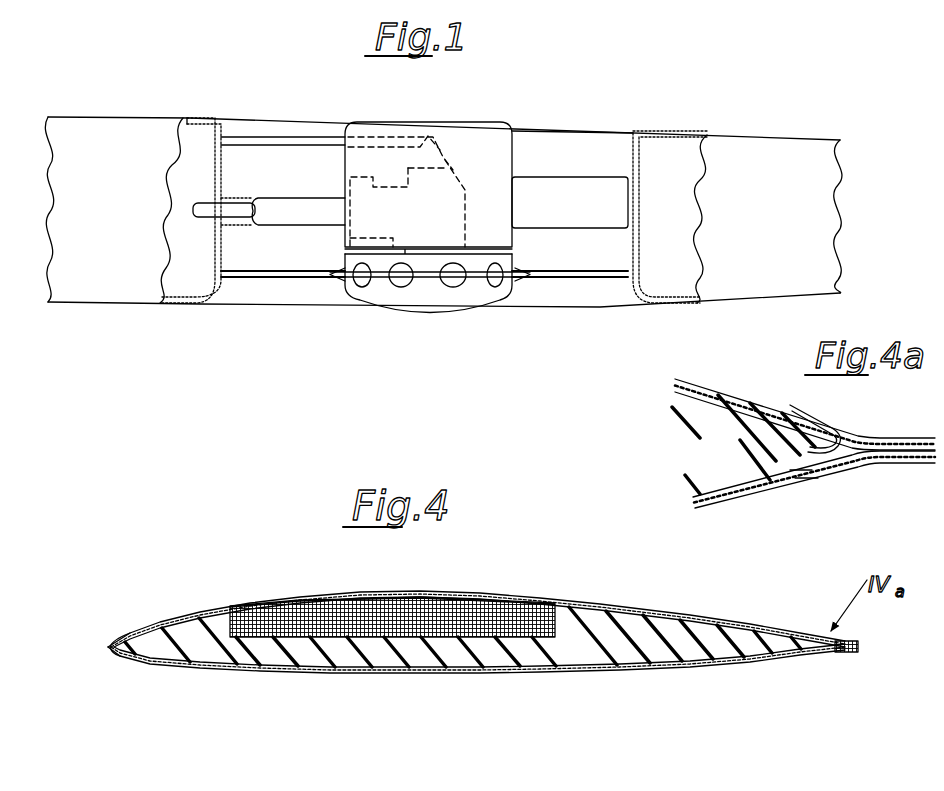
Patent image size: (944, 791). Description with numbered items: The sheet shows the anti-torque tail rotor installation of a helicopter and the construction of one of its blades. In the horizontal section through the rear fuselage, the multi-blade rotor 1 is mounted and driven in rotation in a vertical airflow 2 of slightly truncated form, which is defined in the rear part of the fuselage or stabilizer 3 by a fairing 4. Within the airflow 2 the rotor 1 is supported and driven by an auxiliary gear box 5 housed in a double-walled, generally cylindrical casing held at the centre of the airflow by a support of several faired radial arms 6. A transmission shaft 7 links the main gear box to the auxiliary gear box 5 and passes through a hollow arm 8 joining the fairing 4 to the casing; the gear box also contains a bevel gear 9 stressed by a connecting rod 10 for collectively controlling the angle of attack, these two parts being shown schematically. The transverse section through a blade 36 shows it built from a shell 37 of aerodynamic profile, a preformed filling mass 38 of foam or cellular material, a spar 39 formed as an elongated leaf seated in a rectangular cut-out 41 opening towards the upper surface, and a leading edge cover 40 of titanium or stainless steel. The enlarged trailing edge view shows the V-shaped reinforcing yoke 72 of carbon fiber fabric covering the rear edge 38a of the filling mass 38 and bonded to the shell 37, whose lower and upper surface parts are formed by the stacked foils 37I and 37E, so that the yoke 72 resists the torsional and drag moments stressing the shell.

In FIG. 1, the multi-blade rotor 1 is at (434, 322).
In FIG. 1, the airflow 2 is at (568, 152).
In FIG. 1, the fuselage 3 is at (88, 245).
In FIG. 1, the fairing 4 is at (213, 258).
In FIG. 1, the auxiliary gear box 5 is at (483, 150).
In FIG. 1, the faired radial arms 6 is at (607, 200).
In FIG. 1, the transmission shaft 7 is at (210, 205).
In FIG. 1, the hollow arm 8 is at (287, 213).
In FIG. 1, the bevel gear 9 is at (441, 156).
In FIG. 1, the connecting rod 10 is at (288, 143).
In FIG. 1, the blade 36 is at (555, 282).
In FIG. 4, the blade 36 is at (668, 596).
In FIG. 4, the shell 37 is at (735, 628).
In FIG. 4a, the upper surface foils 37E is at (718, 392).
In FIG. 4a, the lower surface foils 37I is at (748, 504).
In FIG. 4, the filling mass 38 is at (606, 614).
In FIG. 4a, the filling mass 38 is at (690, 446).
In FIG. 4a, the rear edge of the filling mass 38a is at (806, 482).
In FIG. 4, the spar 39 is at (492, 599).
In FIG. 4, the leading edge cover 40 is at (157, 618).
In FIG. 4, the cut-out 41 is at (325, 594).
In FIG. 4a, the trailing edge yoke 72 is at (803, 422).